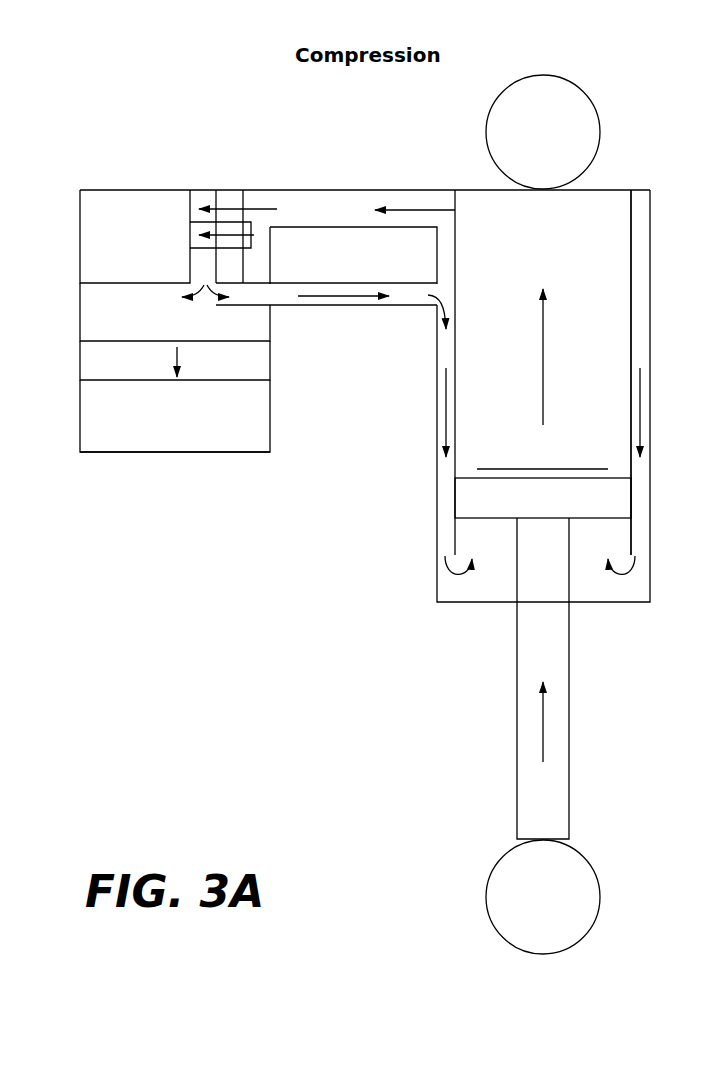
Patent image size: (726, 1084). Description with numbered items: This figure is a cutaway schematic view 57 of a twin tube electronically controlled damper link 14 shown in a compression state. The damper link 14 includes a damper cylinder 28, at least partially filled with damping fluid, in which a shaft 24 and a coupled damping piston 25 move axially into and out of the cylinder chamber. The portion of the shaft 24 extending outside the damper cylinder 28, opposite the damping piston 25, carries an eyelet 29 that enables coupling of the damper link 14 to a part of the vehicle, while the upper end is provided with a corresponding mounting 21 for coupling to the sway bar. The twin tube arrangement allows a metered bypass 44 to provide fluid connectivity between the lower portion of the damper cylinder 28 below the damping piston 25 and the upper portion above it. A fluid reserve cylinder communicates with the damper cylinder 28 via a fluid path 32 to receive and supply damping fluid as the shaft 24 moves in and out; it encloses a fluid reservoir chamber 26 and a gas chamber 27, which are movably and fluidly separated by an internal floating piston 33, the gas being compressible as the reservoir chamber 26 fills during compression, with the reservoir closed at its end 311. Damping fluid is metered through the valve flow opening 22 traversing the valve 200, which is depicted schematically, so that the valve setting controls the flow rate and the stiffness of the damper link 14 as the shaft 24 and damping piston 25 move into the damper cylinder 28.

The electronically controlled damper link 14 is at (121, 651).
The cutaway schematic view 57 is at (222, 90).
The valve 200 is at (153, 210).
The valve flow opening 22 is at (423, 204).
The fluid path 32 is at (362, 304).
The fluid reservoir chamber 26 is at (263, 317).
The internal floating piston 33 is at (263, 360).
The gas chamber 27 is at (263, 410).
The reservoir end wall 311 is at (188, 458).
The upper eyelet 21 is at (601, 133).
The damper cylinder 28 is at (613, 265).
The bypass 44 is at (650, 400).
The damping piston 25 is at (462, 499).
The shaft 24 is at (569, 705).
The eyelet 29 is at (600, 897).